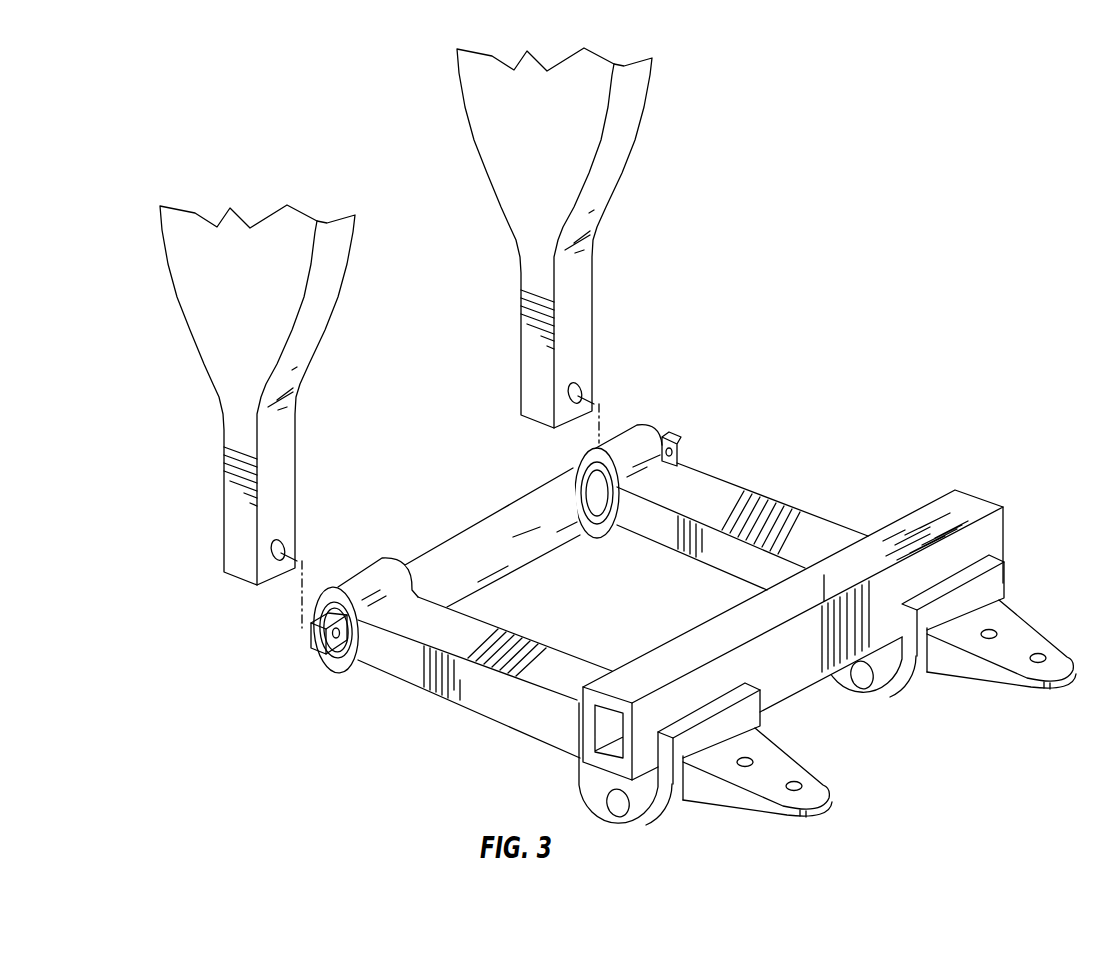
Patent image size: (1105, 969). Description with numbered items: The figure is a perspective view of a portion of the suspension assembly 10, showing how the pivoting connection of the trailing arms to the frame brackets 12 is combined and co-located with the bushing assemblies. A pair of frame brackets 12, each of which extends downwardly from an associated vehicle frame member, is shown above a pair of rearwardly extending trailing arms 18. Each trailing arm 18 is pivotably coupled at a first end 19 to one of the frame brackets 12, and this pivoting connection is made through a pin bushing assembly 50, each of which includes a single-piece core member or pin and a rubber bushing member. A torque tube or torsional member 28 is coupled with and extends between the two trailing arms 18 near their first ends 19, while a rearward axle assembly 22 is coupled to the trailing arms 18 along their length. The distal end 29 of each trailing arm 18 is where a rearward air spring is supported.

The suspension assembly 10 is at (664, 646).
The frame bracket 12 is at (282, 338).
The rearwardly extending trailing arm 18 is at (497, 708).
The first end 19 is at (358, 665).
The rearward axle assembly 22 is at (811, 686).
The torque tube 28 is at (507, 505).
The distal end 29 is at (783, 810).
The pin bushing assembly 50 is at (297, 647).